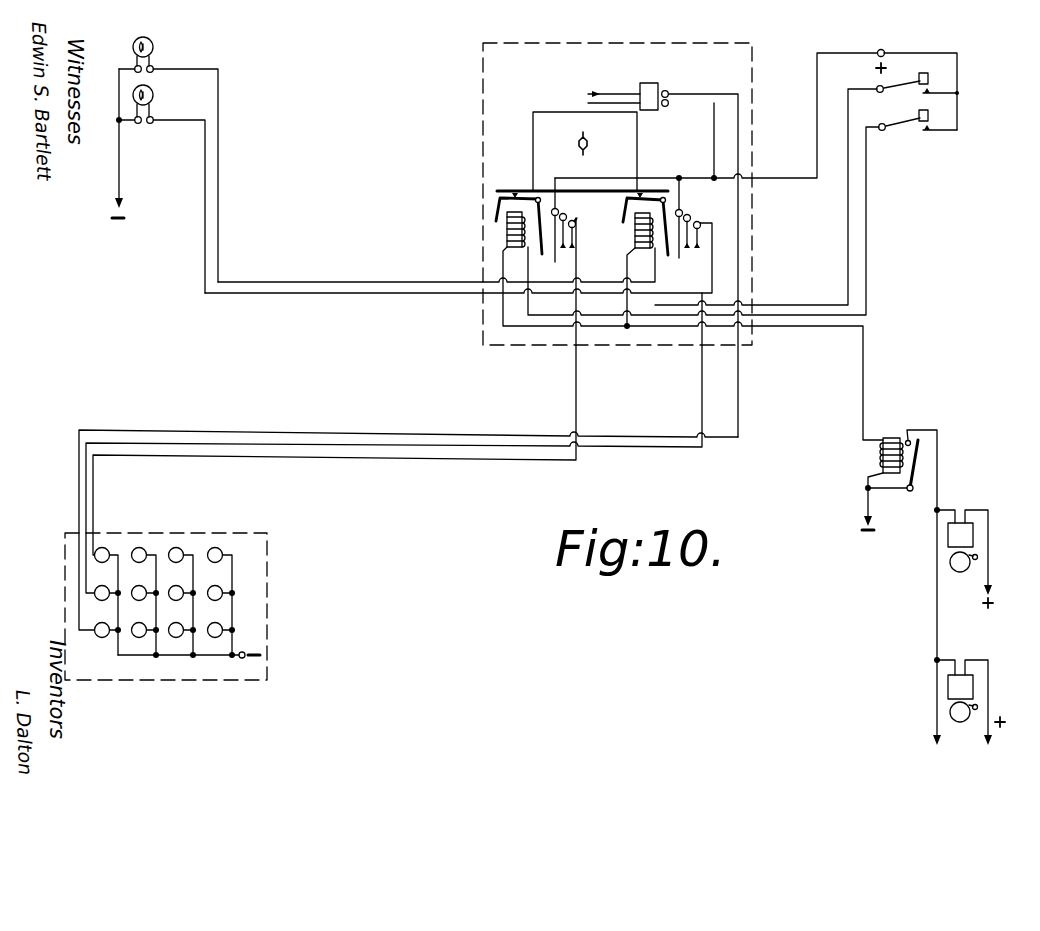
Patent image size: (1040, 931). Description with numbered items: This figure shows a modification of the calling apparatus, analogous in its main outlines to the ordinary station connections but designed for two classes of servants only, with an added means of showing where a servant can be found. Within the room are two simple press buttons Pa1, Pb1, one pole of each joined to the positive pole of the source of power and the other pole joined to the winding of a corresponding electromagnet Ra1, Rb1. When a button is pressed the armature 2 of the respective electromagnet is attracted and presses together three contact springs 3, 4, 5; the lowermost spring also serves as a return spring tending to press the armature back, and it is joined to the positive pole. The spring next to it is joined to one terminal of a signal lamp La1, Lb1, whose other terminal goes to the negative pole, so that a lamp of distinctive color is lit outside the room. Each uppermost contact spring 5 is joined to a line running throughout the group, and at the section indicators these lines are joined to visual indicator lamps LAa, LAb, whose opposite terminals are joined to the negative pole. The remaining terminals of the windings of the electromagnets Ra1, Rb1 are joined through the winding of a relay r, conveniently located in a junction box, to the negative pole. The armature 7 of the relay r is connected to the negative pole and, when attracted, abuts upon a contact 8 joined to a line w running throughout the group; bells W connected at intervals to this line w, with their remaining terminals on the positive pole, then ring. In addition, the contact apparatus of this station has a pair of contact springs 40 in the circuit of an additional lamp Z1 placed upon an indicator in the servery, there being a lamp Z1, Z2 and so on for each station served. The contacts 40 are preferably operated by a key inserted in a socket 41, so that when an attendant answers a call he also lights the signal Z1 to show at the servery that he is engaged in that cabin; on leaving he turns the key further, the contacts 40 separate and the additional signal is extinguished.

The armature 2 is at (495, 207).
The contact spring 3 is at (559, 211).
The contact spring 4 is at (567, 236).
The uppermost contact spring 5 is at (570, 243).
The armature 7 is at (920, 468).
The contact 8 is at (906, 440).
The pair of contact springs 40 is at (620, 93).
The socket 41 is at (588, 150).
The electromagnet Rb1 is at (479, 232).
The electromagnet Ra1 is at (640, 248).
The signal lamp Lb1 is at (166, 54).
The signal lamp La1 is at (164, 104).
The press button Pa1 is at (930, 80).
The press button Pb1 is at (930, 117).
The visual indicator lamp LAb is at (94, 556).
The visual indicator lamp LAa is at (94, 597).
The additional signal lamp Z1 is at (100, 638).
The additional signal lamp Z2 is at (138, 638).
The relay r is at (879, 456).
The bell W is at (969, 628).
The line w is at (937, 621).